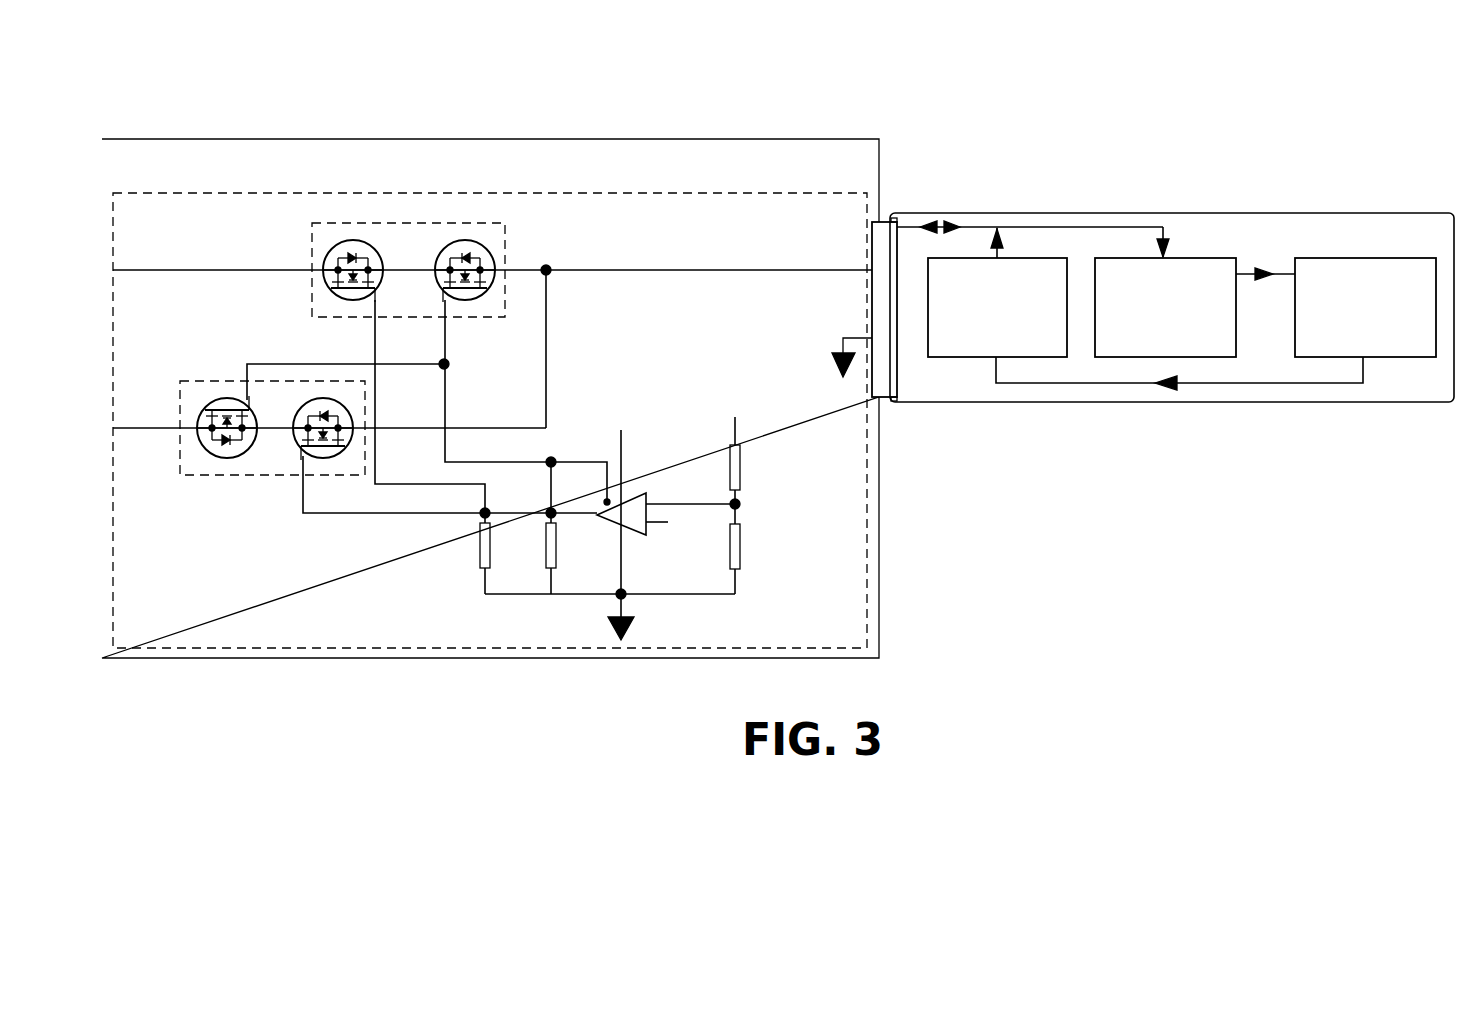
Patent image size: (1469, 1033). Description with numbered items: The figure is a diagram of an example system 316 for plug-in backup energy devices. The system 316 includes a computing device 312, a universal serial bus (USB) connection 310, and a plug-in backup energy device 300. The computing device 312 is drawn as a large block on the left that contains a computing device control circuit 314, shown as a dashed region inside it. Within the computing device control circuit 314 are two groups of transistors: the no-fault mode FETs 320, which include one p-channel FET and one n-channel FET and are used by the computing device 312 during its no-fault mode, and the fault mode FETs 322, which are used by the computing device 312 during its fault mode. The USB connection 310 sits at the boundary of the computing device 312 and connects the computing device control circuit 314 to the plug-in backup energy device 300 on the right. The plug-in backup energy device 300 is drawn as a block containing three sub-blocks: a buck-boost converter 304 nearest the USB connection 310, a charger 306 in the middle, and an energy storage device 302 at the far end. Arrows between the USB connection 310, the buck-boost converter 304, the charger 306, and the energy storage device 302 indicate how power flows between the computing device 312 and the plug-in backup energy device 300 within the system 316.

The plug-in backup energy device 300 is at (1454, 238).
The energy storage device 302 is at (1398, 357).
The buck-boost converter 304 is at (1033, 357).
The charger 306 is at (1203, 357).
The USB connection 310 is at (893, 400).
The computing device 312 is at (677, 139).
The computing device control circuit 314 is at (867, 619).
The system 316 is at (212, 57).
The no-fault mode FETs 320 is at (472, 223).
The fault mode FETs 322 is at (207, 475).